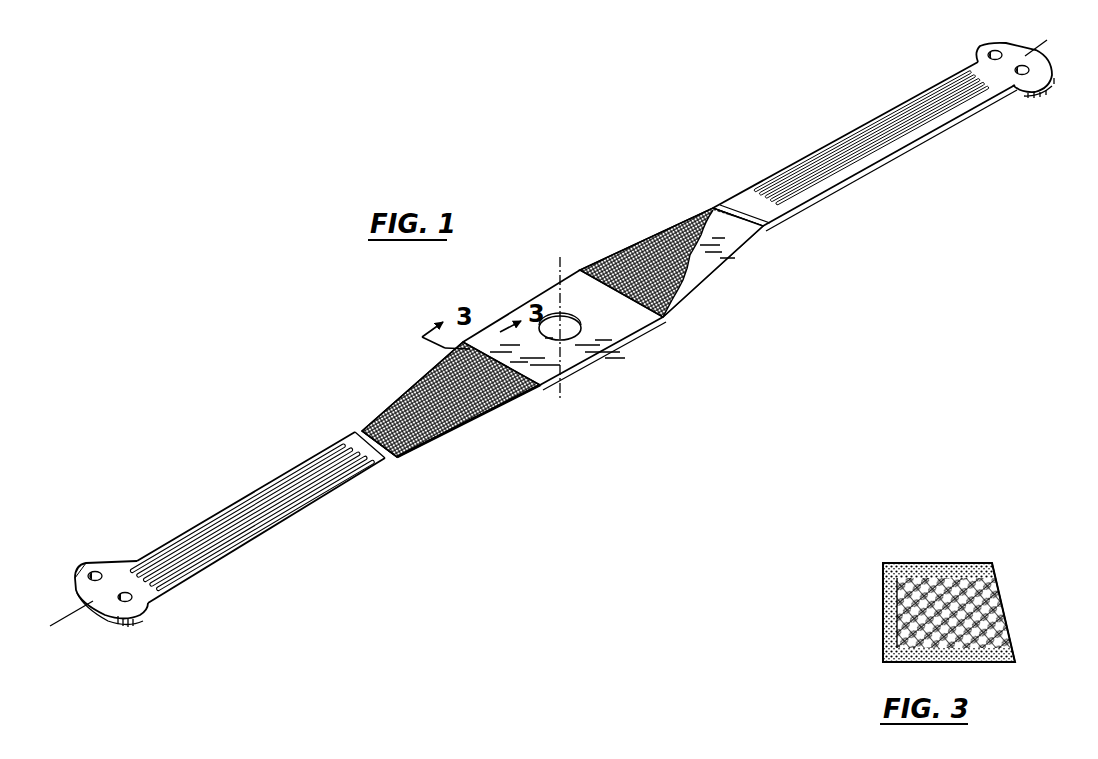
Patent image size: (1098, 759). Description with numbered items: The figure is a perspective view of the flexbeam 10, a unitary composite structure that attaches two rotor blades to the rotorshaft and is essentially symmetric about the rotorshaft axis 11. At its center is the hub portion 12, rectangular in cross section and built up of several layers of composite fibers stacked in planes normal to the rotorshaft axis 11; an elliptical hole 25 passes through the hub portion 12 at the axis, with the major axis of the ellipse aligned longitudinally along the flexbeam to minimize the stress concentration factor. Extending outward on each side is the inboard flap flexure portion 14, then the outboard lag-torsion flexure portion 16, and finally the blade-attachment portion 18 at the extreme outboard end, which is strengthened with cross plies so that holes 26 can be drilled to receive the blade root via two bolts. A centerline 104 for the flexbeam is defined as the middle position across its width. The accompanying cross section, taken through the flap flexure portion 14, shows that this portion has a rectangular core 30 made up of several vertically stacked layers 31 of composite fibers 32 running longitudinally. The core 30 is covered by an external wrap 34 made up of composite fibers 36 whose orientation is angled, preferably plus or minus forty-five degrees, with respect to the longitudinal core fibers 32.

In FIG. 1, the flexbeam 10 is at (598, 206).
In FIG. 1, the rotorshaft axis 11 is at (556, 270).
In FIG. 1, the hub portion 12 is at (606, 334).
In FIG. 1, the inboard flap flexure portion 14 is at (413, 384).
In FIG. 3, the inboard flap flexure portion 14 is at (1022, 567).
In FIG. 1, the outboard lag-torsion flexure portion 16 is at (277, 527).
In FIG. 1, the blade-attachment portion 18 is at (143, 606).
In FIG. 1, the elliptical hole 25 is at (553, 318).
In FIG. 1, the holes 26 is at (123, 594).
In FIG. 1, the core 30 is at (731, 246).
In FIG. 3, the core 30 is at (1017, 646).
In FIG. 3, the layers 31 is at (1007, 603).
In FIG. 3, the composite fibers 32 is at (1012, 634).
In FIG. 1, the external wrap 34 is at (392, 402).
In FIG. 3, the external wrap 34 is at (985, 565).
In FIG. 3, the composite fibers 36 is at (891, 648).
In FIG. 1, the centerline 104 is at (1046, 52).